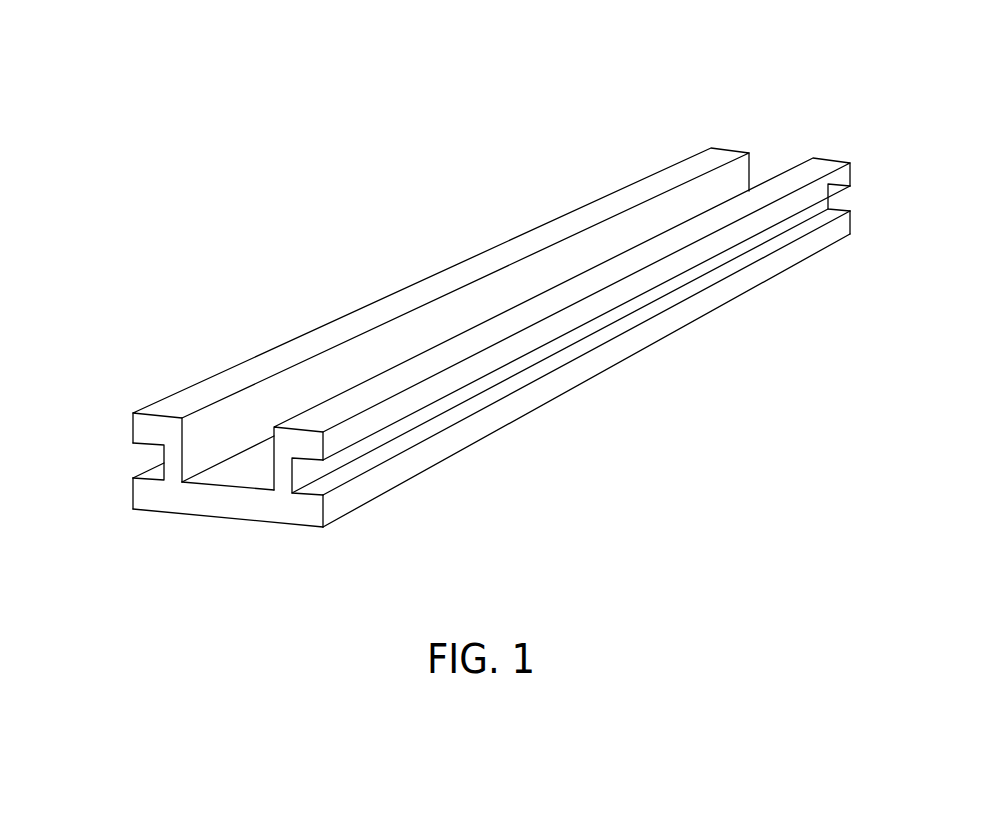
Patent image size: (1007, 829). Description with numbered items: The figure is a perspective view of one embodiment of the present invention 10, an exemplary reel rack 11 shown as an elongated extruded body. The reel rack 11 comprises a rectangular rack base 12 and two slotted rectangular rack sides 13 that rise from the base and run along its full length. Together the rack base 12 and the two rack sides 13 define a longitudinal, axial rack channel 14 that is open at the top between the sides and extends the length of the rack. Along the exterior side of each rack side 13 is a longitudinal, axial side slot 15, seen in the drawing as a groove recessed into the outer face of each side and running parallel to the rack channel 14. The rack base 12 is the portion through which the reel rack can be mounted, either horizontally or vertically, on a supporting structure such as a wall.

The embodiment of the present invention 10 is at (455, 311).
The reel rack 11 is at (655, 147).
The rack base 12 is at (298, 512).
The rack sides 13 is at (116, 419).
The rack channel 14 is at (272, 405).
The side slot 15 is at (143, 460).